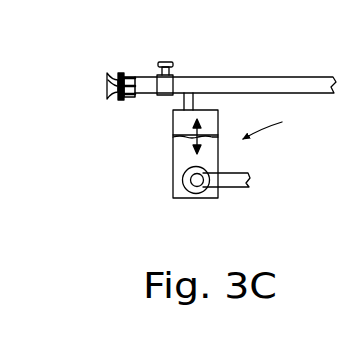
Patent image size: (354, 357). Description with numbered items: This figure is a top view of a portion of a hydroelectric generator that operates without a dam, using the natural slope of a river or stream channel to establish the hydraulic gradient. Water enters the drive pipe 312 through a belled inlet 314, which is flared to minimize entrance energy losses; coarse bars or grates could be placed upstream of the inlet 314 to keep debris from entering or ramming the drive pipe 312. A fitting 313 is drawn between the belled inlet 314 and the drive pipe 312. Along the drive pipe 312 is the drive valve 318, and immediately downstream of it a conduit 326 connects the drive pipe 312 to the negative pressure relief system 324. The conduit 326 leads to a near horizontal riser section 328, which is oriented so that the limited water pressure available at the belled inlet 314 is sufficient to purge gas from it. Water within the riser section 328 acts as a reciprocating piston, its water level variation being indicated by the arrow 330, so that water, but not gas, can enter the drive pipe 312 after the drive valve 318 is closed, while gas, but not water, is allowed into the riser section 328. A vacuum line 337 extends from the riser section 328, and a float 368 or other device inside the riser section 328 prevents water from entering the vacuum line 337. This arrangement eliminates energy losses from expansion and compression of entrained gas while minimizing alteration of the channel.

The drive pipe 312 is at (220, 80).
The fitting 313 is at (126, 75).
The belled inlet 314 is at (107, 92).
The drive valve 318 is at (165, 96).
The negative pressure relief system 324 is at (283, 125).
The conduit 326 is at (193, 99).
The near horizontal riser section 328 is at (166, 181).
The water level variation 330 is at (204, 137).
The vacuum line 337 is at (238, 189).
The float 368 is at (195, 188).